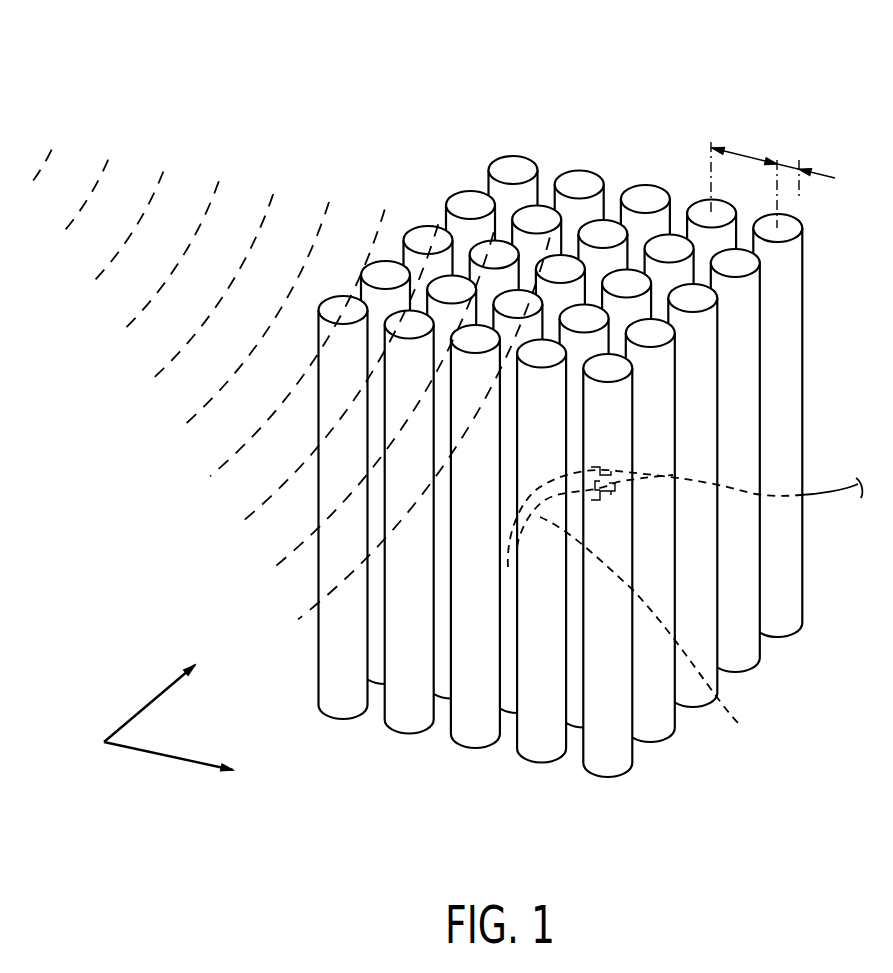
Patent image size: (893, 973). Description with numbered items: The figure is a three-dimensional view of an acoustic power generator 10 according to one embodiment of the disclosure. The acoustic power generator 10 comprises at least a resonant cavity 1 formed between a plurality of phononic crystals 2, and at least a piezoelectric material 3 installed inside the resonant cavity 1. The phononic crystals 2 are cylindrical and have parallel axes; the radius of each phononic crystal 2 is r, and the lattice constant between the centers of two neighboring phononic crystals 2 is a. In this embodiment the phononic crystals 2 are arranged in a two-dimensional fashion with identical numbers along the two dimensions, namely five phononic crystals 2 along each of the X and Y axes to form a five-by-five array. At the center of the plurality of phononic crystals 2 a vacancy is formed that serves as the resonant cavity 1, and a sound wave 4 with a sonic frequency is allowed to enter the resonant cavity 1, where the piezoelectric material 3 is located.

The acoustic power generator 10 is at (568, 47).
The resonant cavity 1 is at (560, 430).
The phononic crystals 2 is at (508, 162).
The piezoelectric material 3 is at (685, 605).
The sound wave 4 is at (250, 184).